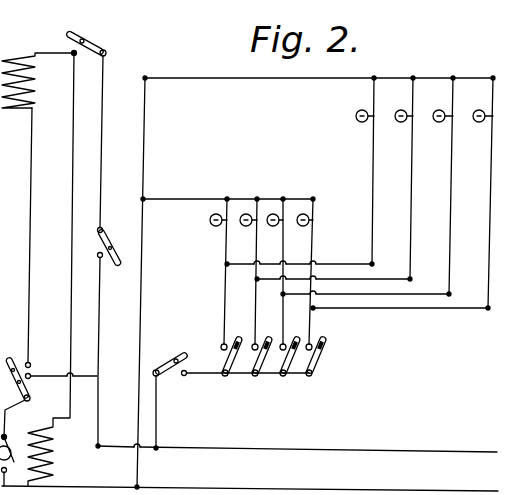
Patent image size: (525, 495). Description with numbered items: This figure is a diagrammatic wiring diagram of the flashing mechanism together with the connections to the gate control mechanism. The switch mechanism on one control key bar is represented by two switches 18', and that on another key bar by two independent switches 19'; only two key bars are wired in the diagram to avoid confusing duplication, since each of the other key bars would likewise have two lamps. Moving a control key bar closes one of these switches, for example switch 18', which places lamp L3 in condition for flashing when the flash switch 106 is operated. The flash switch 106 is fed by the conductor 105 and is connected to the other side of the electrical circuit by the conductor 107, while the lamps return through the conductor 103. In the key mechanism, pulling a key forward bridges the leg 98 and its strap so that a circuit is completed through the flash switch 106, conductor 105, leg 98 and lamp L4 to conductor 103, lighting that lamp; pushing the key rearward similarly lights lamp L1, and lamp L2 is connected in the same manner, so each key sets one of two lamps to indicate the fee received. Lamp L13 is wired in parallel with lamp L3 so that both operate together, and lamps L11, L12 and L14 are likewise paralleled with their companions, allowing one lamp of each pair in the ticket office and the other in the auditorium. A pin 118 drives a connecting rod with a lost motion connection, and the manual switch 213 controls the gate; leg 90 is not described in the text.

The leg 98 is at (38, 118).
The conductor 90 is at (16, 238).
The pin 118 is at (92, 41).
The manual switch 213 is at (113, 243).
The conductor 103 is at (140, 277).
The conductor 105 is at (188, 378).
The flash switch 106 is at (168, 358).
The conductor 107 is at (157, 417).
The switch 18' is at (225, 370).
The switch 19' is at (287, 370).
The lamp L1 is at (305, 226).
The lamp L2 is at (248, 228).
The lamp L3 is at (209, 228).
The lamp L4 is at (276, 228).
The lamp L11 is at (476, 120).
The lamp L12 is at (398, 120).
The lamp L13 is at (354, 120).
The lamp L14 is at (437, 120).